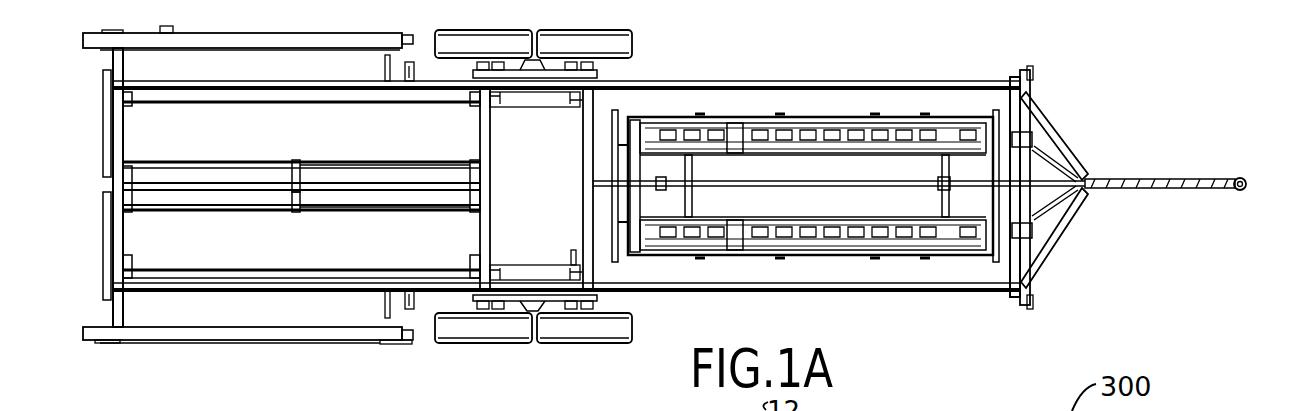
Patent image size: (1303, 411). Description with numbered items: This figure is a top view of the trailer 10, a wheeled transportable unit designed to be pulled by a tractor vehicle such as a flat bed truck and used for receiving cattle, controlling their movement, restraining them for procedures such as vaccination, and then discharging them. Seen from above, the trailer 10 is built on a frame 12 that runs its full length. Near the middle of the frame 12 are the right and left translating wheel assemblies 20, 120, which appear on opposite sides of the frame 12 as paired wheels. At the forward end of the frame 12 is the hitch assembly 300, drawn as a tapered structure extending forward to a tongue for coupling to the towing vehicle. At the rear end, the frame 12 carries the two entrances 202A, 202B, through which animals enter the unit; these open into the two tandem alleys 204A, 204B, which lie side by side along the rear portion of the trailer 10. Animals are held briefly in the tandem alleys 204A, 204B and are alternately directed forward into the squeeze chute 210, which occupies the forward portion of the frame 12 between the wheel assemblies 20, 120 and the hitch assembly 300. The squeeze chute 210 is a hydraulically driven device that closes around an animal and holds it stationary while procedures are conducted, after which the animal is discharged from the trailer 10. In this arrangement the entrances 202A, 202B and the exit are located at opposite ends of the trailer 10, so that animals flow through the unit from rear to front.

The trailer 10 is at (832, 72).
The frame 12 is at (813, 296).
The right translating wheel assembly 20 is at (637, 332).
The left translating wheel assembly 120 is at (640, 38).
The entrance 202A is at (128, 139).
The entrance 202B is at (128, 240).
The tandem alley 204A is at (415, 147).
The tandem alley 204B is at (395, 249).
The squeeze chute 210 is at (842, 181).
The hitch assembly 300 is at (1068, 128).